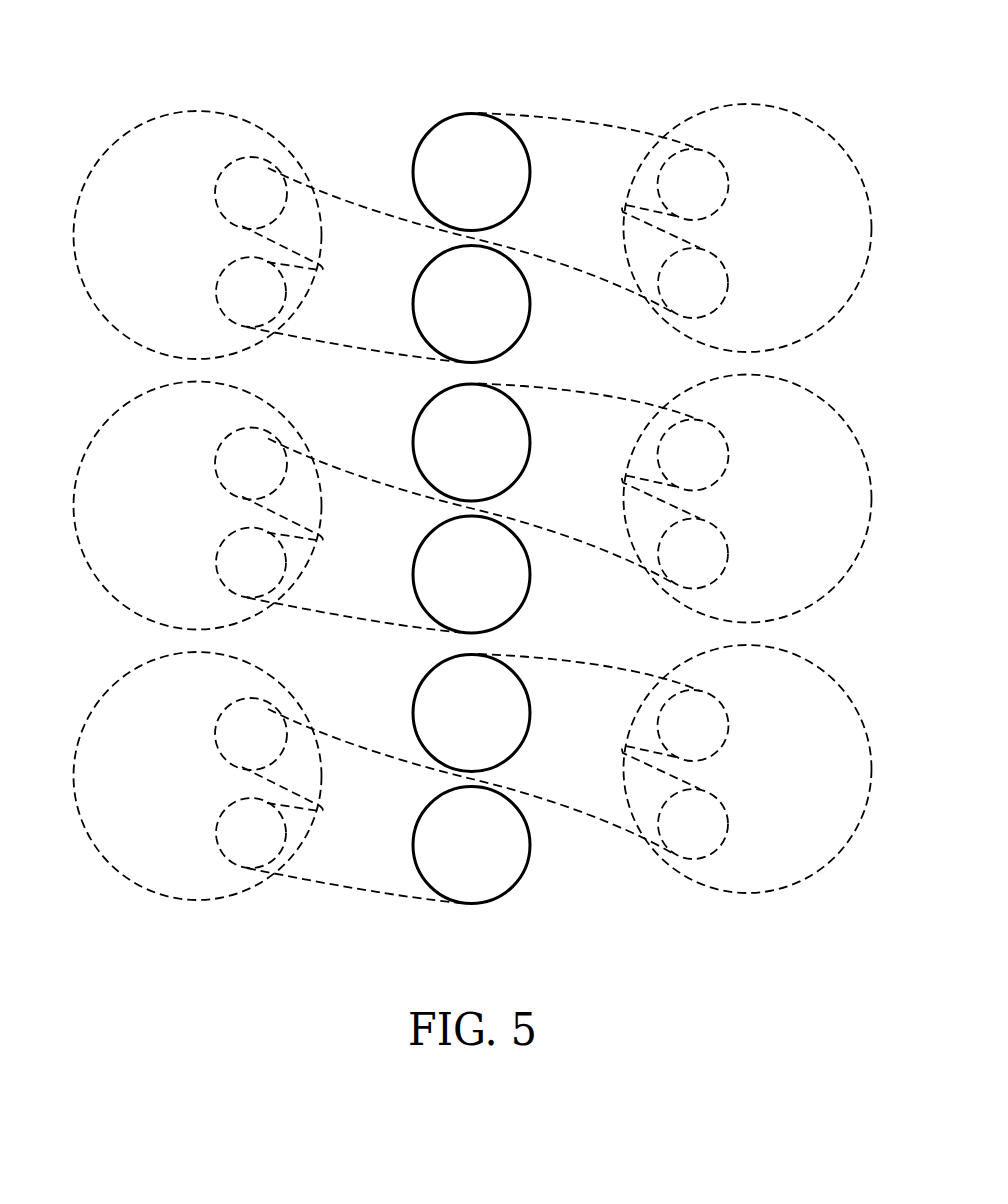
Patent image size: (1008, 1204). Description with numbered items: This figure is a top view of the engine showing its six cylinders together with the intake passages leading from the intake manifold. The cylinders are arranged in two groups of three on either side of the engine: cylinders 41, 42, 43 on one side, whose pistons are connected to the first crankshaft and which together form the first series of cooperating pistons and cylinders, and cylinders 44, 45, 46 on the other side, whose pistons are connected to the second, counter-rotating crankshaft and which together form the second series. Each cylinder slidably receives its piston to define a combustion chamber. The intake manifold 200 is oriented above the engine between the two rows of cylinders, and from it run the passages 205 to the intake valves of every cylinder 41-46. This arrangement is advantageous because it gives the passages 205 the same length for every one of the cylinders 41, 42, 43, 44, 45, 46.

The intake manifold 200 is at (478, 113).
The passages 205 is at (580, 123).
The cylinder 41 is at (130, 881).
The cylinder 42 is at (130, 610).
The cylinder 43 is at (130, 340).
The cylinder 44 is at (822, 868).
The cylinder 45 is at (820, 597).
The cylinder 46 is at (820, 327).